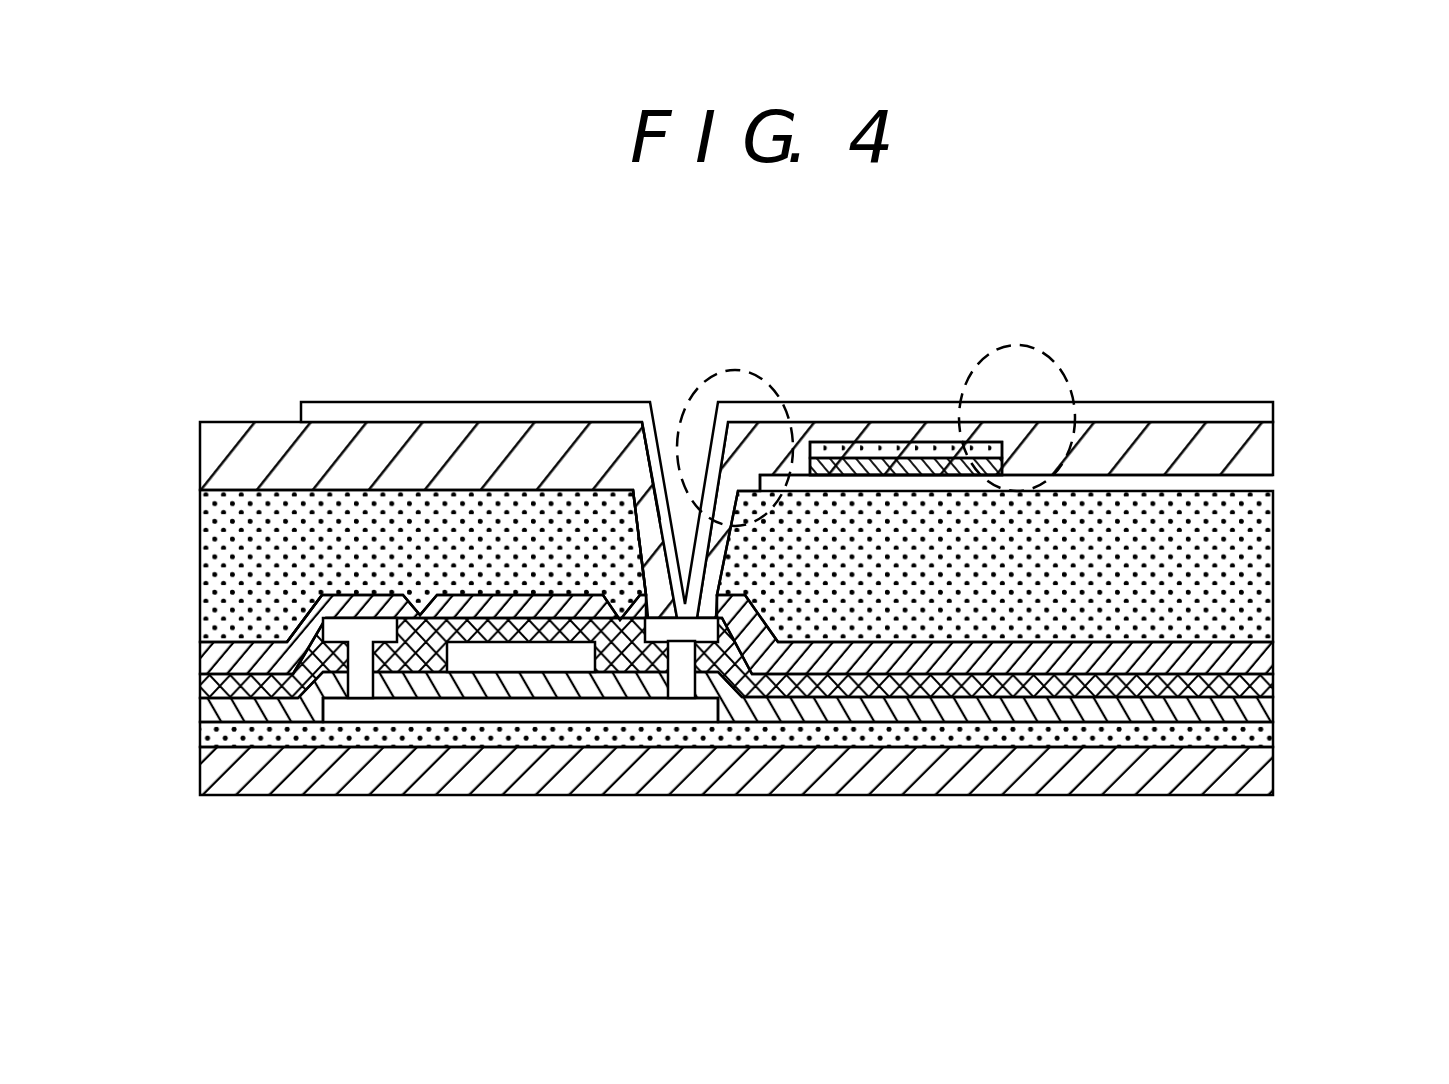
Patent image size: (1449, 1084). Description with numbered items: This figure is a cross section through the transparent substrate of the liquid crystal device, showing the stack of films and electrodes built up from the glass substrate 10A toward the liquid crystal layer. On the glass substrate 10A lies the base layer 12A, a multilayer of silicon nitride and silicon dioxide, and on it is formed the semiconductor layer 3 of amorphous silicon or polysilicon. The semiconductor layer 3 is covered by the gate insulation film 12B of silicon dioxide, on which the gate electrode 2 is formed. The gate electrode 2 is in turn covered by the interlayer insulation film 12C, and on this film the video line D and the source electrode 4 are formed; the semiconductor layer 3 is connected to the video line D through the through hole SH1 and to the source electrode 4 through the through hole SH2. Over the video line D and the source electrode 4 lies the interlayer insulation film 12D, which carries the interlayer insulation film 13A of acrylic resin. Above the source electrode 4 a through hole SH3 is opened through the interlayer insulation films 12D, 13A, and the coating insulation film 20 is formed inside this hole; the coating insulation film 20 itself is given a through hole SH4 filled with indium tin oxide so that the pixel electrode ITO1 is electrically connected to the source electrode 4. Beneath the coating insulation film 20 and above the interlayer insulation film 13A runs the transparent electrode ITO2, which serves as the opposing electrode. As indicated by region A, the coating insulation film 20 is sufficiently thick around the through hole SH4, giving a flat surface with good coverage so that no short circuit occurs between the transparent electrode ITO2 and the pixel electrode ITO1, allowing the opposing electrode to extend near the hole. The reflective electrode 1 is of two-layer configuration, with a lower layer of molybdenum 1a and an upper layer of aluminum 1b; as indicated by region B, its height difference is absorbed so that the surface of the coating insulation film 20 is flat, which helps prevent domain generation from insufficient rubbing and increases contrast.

The reflective electrode 1 is at (906, 369).
The lower layer of molybdenum 1a is at (832, 450).
The upper layer of aluminum 1b is at (931, 444).
The gate electrode 2 is at (523, 660).
The semiconductor layer 3 is at (457, 710).
The source electrode 4 is at (662, 628).
The glass substrate 10A is at (1272, 775).
The base layer 12A is at (1272, 728).
The gate insulation film 12B is at (1272, 705).
The interlayer insulation film 12C is at (200, 688).
The interlayer insulation film 12D is at (200, 655).
The interlayer insulation film 13A is at (1240, 568).
The coating insulation film 20 is at (1272, 447).
The area of the through hole A is at (702, 380).
The area of the reflective electrode B is at (1052, 360).
The video line D is at (318, 612).
The pixel electrode ITO1 is at (1159, 413).
The transparent electrode ITO2 is at (1222, 482).
The through hole SH1 is at (362, 675).
The through hole SH2 is at (680, 645).
The through hole SH3 is at (647, 553).
The through hole SH4 is at (650, 487).